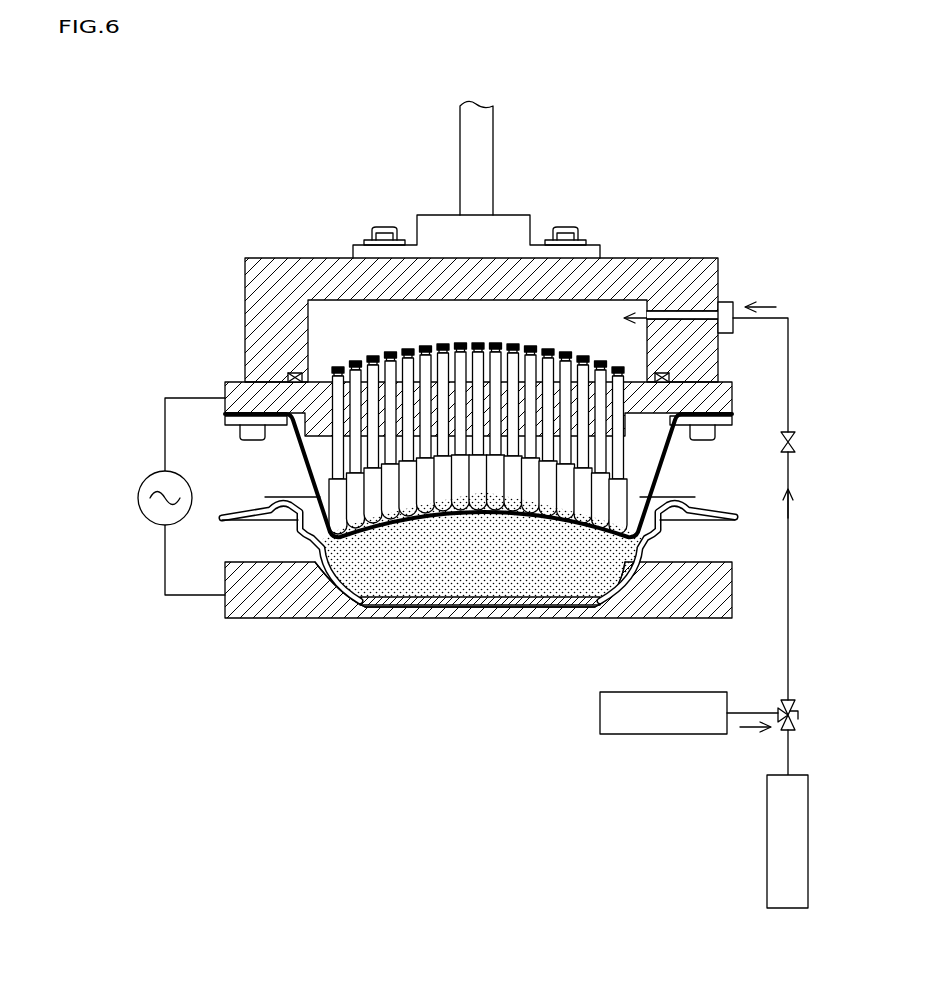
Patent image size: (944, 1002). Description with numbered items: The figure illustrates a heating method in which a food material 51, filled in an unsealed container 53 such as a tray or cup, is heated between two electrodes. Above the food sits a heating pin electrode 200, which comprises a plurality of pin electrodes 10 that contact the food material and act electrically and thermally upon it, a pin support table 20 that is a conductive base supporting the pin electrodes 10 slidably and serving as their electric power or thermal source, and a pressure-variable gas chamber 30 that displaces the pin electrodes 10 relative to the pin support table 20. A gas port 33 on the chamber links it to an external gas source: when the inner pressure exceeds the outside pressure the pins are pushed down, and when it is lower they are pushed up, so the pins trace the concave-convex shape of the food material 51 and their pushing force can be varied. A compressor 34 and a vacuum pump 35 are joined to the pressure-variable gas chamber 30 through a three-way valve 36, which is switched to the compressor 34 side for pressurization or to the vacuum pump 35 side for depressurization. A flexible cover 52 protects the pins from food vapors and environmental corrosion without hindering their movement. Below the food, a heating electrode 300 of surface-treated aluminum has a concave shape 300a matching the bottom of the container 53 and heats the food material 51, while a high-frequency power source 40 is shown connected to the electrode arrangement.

The heating pin electrode 200 is at (340, 228).
The pressure-variable gas chamber 30 is at (677, 205).
The gas port 33 is at (734, 302).
The pin support table 20 is at (227, 372).
The pin electrode 10 is at (630, 456).
The high-frequency power source 40 is at (148, 470).
The cover 52 is at (288, 440).
The container 53 is at (270, 590).
The food material 51 is at (513, 578).
The heating electrode 300 is at (470, 624).
The concave shape 300a is at (350, 606).
The compressor 34 is at (678, 735).
The vacuum pump 35 is at (767, 830).
The three-way valve 36 is at (790, 700).